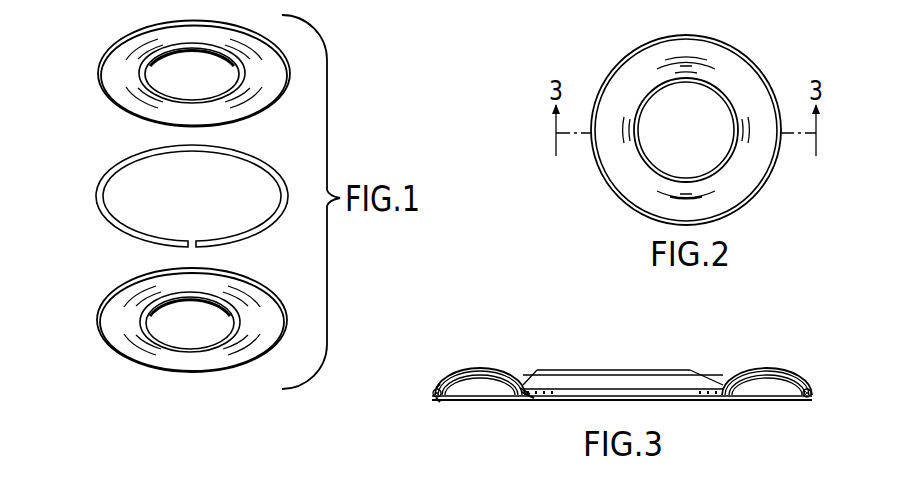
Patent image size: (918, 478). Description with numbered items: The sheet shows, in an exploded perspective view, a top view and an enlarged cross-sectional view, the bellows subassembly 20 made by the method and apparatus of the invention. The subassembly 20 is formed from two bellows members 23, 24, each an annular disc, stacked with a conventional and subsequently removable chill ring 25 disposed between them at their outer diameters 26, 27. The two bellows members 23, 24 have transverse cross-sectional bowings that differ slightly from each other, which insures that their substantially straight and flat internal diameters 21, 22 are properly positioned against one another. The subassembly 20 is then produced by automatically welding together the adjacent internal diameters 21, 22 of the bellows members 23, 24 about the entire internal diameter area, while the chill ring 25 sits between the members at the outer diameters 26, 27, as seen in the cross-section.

In FIG. 2, the bellows subassembly 20 is at (691, 120).
In FIG. 3, the bellows subassembly 20 is at (597, 383).
In FIG. 1, the internal diameter 21 is at (237, 65).
In FIG. 3, the internal diameter 21 is at (527, 388).
In FIG. 1, the internal diameter 22 is at (233, 313).
In FIG. 3, the internal diameter 22 is at (530, 396).
In FIG. 1, the bellows member 23 is at (128, 55).
In FIG. 2, the bellows member 23 is at (637, 72).
In FIG. 3, the bellows member 23 is at (470, 368).
In FIG. 1, the bellows member 24 is at (125, 305).
In FIG. 3, the bellows member 24 is at (480, 383).
In FIG. 1, the chill ring 25 is at (104, 180).
In FIG. 3, the chill ring 25 is at (430, 392).
In FIG. 1, the outer diameter 26 is at (100, 82).
In FIG. 3, the outer diameter 26 is at (442, 385).
In FIG. 1, the outer diameter 27 is at (100, 335).
In FIG. 3, the outer diameter 27 is at (434, 400).